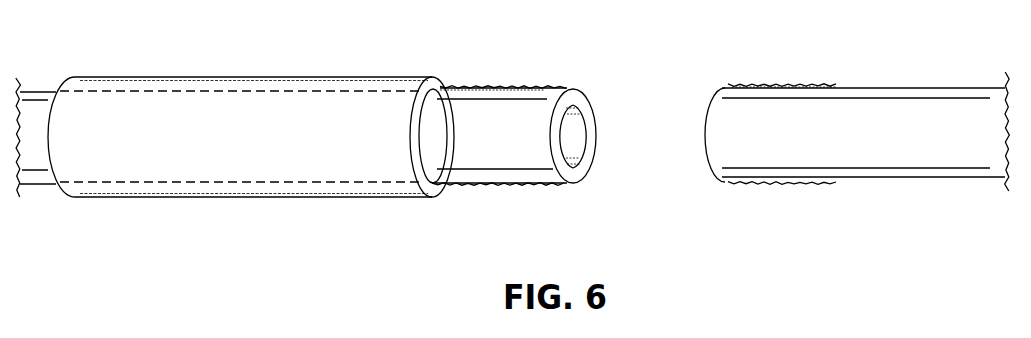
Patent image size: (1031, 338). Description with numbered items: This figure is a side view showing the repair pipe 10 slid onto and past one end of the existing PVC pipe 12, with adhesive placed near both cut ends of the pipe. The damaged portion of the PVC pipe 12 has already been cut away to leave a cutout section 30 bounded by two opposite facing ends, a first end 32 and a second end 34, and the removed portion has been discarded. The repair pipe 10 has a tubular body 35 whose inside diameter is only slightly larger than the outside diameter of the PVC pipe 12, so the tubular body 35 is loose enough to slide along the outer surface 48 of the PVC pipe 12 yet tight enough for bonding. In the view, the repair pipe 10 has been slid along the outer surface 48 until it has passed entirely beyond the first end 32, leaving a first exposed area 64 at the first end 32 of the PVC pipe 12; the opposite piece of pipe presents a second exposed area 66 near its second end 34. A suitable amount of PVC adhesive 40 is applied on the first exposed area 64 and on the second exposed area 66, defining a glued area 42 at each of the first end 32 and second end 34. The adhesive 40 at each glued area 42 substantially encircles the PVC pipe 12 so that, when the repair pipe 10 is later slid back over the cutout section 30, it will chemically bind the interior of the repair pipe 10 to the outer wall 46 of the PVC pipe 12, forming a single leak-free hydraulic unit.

The repair pipe 10 is at (358, 62).
The PVC pipe 12 is at (492, 158).
The cutout section 30 is at (640, 103).
The first end 32 is at (574, 192).
The second end 34 is at (724, 191).
The tubular body 35 is at (225, 107).
The PVC adhesive 40 is at (527, 86).
The glued area 42 is at (482, 80).
The outer wall 46 is at (889, 116).
The outer surface 48 is at (158, 170).
The first exposed area 64 is at (437, 157).
The second exposed area 66 is at (792, 152).